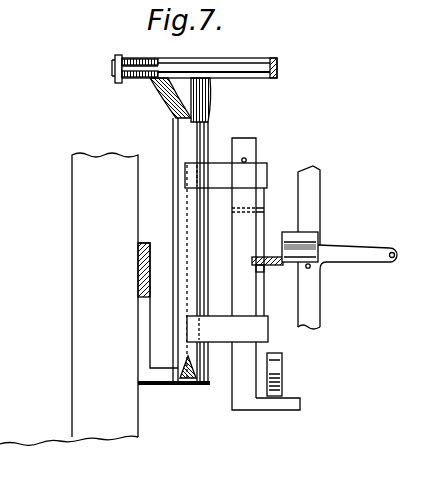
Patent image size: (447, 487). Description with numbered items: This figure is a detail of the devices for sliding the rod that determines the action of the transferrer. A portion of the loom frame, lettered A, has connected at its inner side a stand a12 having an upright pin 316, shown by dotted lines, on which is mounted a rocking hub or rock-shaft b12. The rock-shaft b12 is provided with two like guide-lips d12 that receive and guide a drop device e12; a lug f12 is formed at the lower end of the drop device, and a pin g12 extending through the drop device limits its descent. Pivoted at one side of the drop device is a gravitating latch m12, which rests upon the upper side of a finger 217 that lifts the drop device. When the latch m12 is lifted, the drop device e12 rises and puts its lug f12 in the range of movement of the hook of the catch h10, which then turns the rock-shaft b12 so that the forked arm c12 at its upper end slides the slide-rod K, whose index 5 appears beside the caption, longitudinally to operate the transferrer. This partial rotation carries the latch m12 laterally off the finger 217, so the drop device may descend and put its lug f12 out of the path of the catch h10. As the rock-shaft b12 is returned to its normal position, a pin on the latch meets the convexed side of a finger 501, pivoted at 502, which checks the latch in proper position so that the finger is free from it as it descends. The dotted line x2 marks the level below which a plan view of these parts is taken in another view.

The slide-rod 5 is at (237, 30).
The rod / shaft K is at (187, 51).
The frame block A is at (72, 240).
The dotted line x2 is at (9, 194).
The forked arm c12 is at (170, 94).
The rocking hub or rock-shaft b12 is at (179, 152).
The guide-lips d12 is at (292, 159).
The pin g12 is at (245, 158).
The drop device e12 is at (258, 142).
The gravitating latch m12 is at (261, 228).
The finger 217 is at (266, 268).
The stand a12 is at (262, 333).
The catch h10 is at (282, 371).
The lug f12 is at (296, 428).
The upright pin 316 is at (202, 386).
The finger 501 is at (299, 240).
The pivot 502 is at (392, 249).